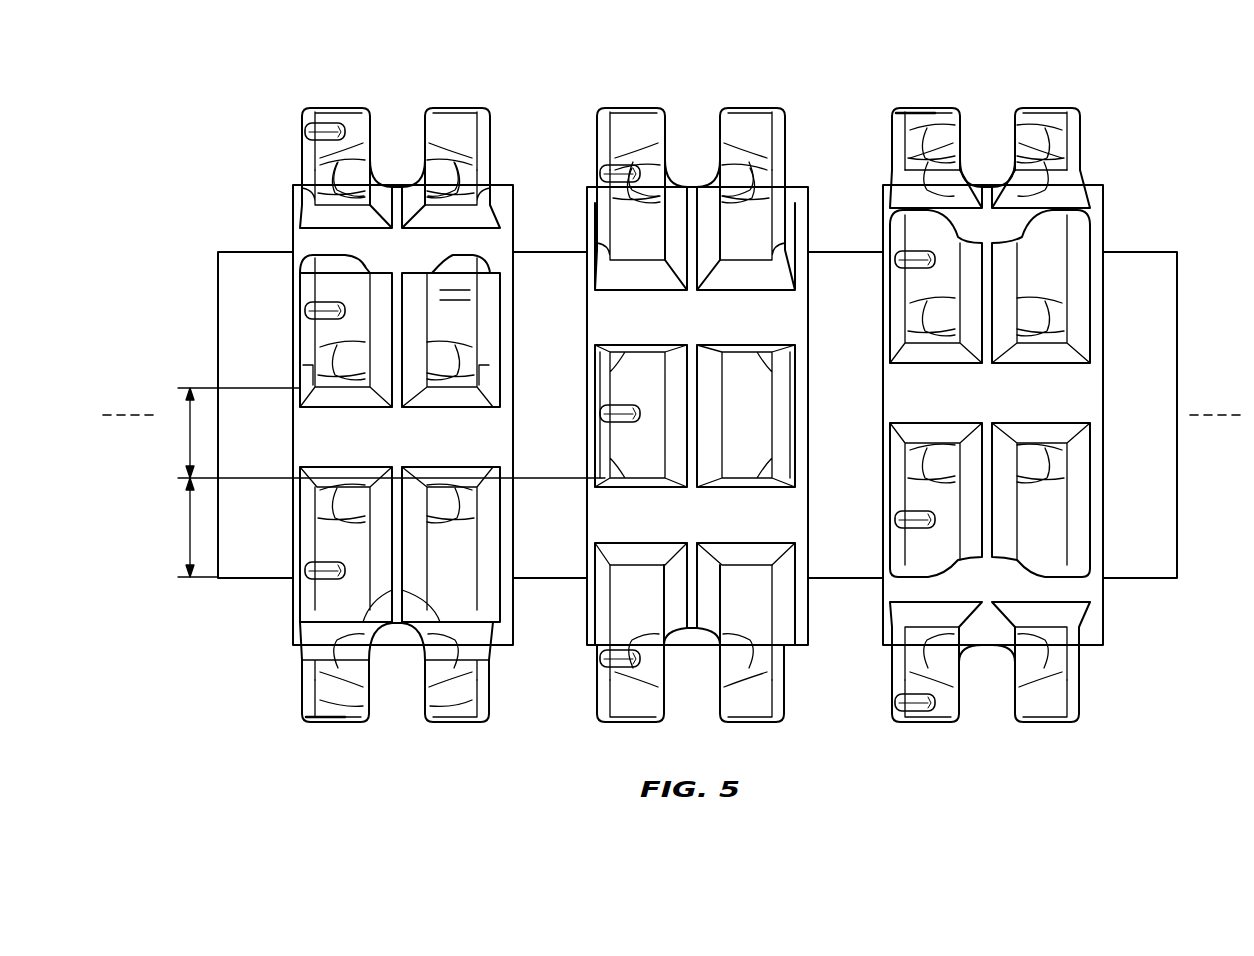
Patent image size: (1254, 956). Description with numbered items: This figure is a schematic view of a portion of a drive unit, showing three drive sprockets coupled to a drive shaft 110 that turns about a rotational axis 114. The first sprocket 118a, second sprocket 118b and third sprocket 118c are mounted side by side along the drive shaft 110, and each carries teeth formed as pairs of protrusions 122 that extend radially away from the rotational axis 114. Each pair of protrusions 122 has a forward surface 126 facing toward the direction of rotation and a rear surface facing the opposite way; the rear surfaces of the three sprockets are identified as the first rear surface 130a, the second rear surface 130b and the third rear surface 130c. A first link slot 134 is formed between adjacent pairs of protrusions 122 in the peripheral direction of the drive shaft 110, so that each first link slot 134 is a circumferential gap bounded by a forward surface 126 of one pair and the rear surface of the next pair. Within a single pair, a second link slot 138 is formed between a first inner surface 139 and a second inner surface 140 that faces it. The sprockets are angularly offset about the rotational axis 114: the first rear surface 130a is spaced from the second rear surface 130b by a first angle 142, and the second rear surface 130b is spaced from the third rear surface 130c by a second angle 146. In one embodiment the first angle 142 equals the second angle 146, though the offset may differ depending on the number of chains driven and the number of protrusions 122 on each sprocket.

The drive shaft 110 is at (246, 252).
The rotational axis 114 is at (1220, 415).
The first sprocket 118a is at (385, 97).
The second sprocket 118b is at (700, 97).
The third sprocket 118c is at (981, 97).
The protrusions 122 is at (485, 110).
The forward surface 126 is at (472, 252).
The first rear surface 130a is at (465, 390).
The second rear surface 130b is at (775, 484).
The third rear surface 130c is at (1060, 580).
The first link slot 134 is at (490, 440).
The second link slot 138 is at (391, 712).
The first inner surface 139 is at (422, 712).
The second inner surface 140 is at (373, 712).
The first angle 142 is at (187, 443).
The second angle 146 is at (187, 527).